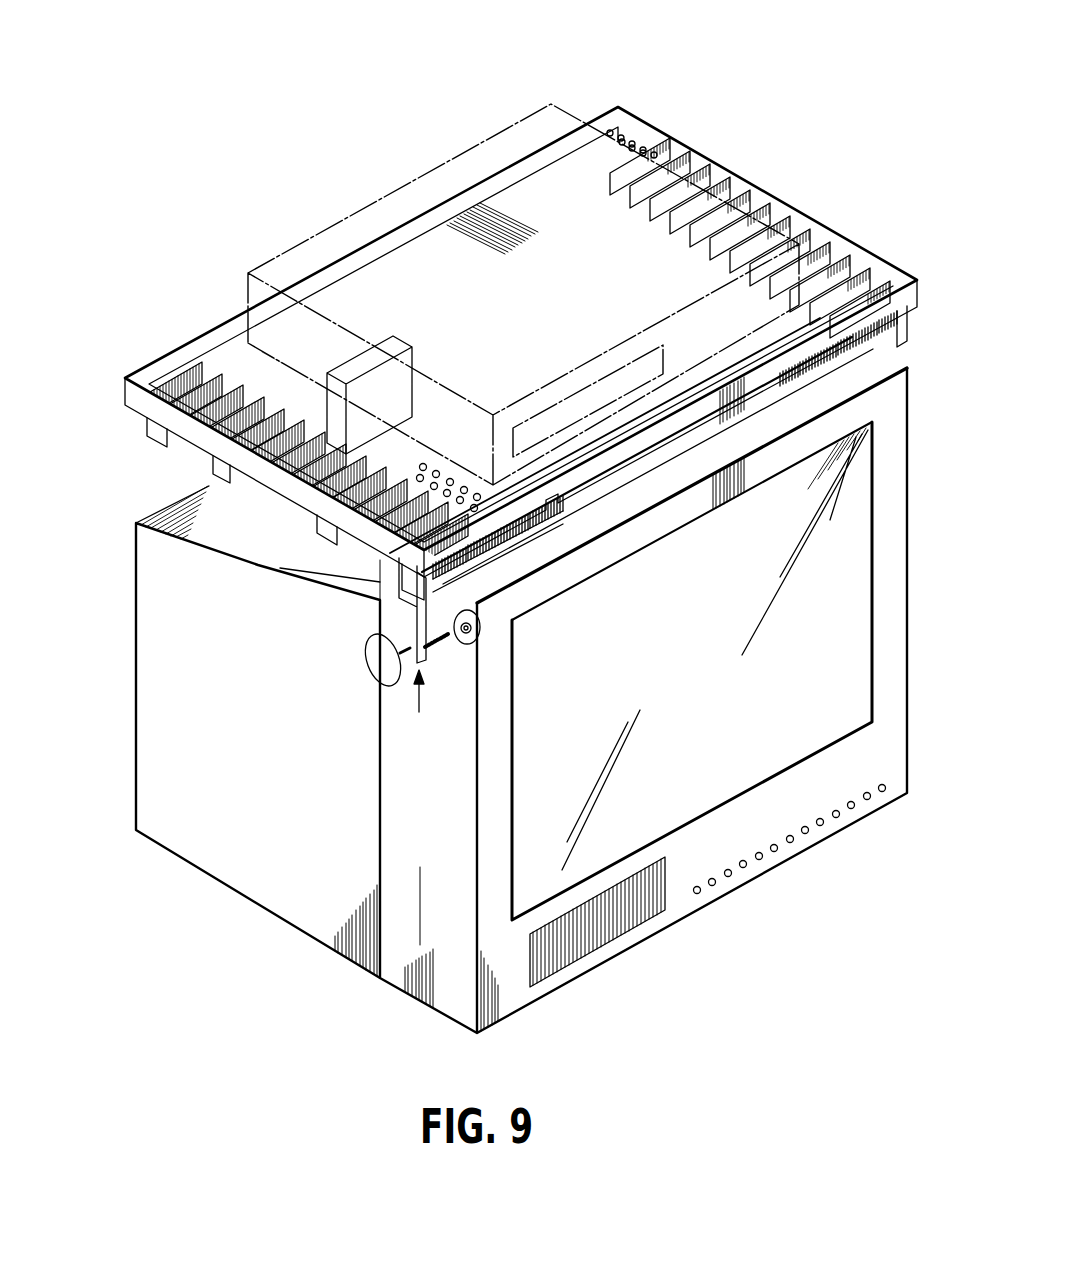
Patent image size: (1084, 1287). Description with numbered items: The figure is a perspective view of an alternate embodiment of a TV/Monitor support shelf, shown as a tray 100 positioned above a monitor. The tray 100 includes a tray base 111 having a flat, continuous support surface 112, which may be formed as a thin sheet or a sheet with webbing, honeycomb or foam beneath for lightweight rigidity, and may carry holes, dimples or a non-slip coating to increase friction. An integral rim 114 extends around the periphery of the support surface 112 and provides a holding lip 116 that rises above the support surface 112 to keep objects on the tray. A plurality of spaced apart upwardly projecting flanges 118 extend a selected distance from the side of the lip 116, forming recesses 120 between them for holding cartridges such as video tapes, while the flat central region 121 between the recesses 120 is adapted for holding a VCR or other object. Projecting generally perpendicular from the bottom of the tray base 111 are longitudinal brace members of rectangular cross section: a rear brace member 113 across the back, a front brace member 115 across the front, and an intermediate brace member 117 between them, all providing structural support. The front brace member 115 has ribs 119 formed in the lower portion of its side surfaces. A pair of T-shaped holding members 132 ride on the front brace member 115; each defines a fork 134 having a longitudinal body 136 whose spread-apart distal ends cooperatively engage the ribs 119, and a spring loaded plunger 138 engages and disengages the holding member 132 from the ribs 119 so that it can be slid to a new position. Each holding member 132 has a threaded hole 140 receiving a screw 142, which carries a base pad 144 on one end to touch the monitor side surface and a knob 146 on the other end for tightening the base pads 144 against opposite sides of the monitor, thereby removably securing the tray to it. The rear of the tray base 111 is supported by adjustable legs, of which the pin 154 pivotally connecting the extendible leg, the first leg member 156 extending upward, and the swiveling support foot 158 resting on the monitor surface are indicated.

The tray 100 is at (688, 106).
The tray base 111 is at (921, 291).
The support surface 112 is at (250, 363).
The rear brace member 113 is at (125, 405).
The rim 114 is at (658, 448).
The front brace member 115 is at (405, 571).
The lip 116 is at (754, 345).
The intermediate brace member 117 is at (258, 532).
The flanges 118 is at (818, 256).
The ribs 119 is at (507, 553).
The recesses 120 is at (745, 180).
The central region 121 is at (672, 398).
The holding member 132 is at (416, 702).
The fork 134 is at (422, 615).
The longitudinal body 136 is at (428, 640).
The spring loaded plunger 138 is at (470, 612).
The threaded hole 140 is at (402, 655).
The screw 142 is at (448, 660).
The base pad 144 is at (478, 637).
The knob 146 is at (362, 668).
The pin 154 is at (452, 458).
The first leg member 156 is at (280, 365).
The swiveling support foot 158 is at (638, 130).